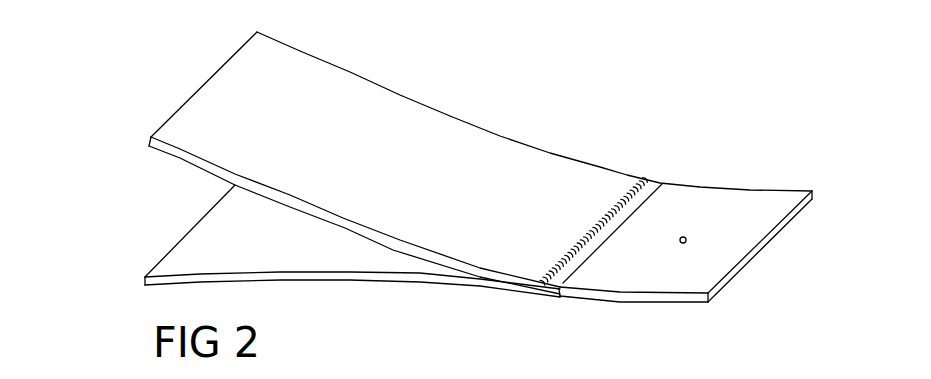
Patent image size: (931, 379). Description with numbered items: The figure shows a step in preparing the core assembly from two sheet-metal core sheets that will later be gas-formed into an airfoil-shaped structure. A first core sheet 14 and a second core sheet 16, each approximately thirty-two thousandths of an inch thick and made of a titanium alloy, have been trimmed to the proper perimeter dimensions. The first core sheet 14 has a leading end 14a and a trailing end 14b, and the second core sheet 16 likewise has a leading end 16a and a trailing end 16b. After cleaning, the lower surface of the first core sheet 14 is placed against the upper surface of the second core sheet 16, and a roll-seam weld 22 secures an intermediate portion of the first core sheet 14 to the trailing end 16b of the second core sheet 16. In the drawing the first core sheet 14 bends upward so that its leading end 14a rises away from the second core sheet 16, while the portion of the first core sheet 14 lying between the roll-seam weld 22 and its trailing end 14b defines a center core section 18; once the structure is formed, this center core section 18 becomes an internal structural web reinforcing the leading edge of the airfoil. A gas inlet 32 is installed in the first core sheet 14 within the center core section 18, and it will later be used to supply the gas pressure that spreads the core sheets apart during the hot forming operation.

The first core sheet 14 is at (511, 110).
The leading end 14a is at (209, 100).
The trailing end 14b is at (788, 218).
The second core sheet 16 is at (121, 261).
The leading end 16a is at (183, 240).
The trailing end 16b is at (564, 300).
The center core section 18 is at (775, 200).
The roll-seam weld 22 is at (625, 175).
The gas inlet 32 is at (686, 244).